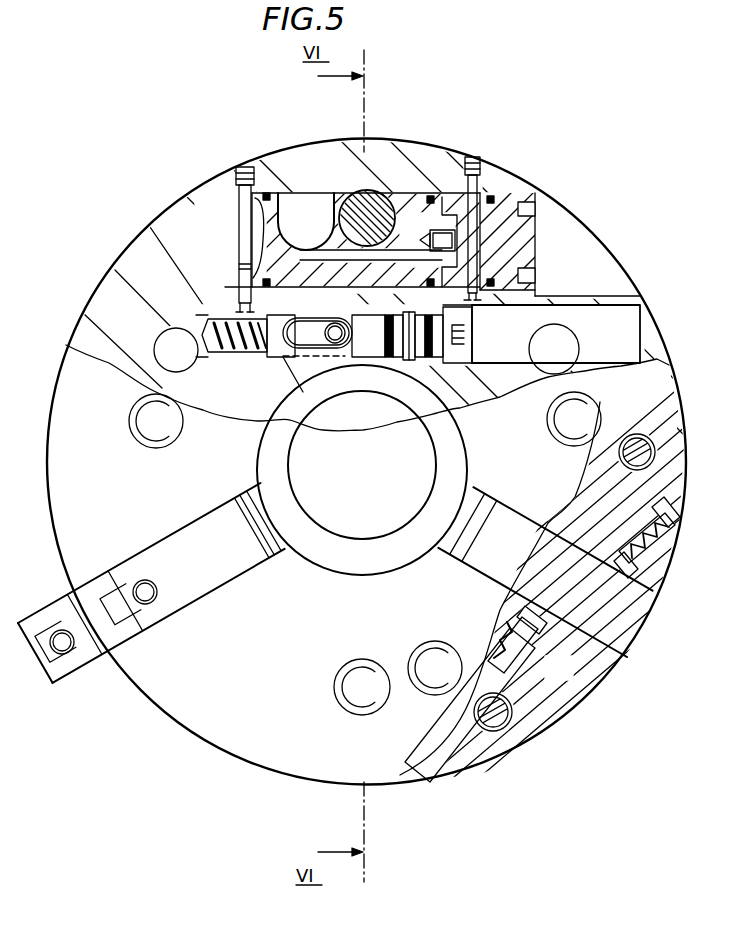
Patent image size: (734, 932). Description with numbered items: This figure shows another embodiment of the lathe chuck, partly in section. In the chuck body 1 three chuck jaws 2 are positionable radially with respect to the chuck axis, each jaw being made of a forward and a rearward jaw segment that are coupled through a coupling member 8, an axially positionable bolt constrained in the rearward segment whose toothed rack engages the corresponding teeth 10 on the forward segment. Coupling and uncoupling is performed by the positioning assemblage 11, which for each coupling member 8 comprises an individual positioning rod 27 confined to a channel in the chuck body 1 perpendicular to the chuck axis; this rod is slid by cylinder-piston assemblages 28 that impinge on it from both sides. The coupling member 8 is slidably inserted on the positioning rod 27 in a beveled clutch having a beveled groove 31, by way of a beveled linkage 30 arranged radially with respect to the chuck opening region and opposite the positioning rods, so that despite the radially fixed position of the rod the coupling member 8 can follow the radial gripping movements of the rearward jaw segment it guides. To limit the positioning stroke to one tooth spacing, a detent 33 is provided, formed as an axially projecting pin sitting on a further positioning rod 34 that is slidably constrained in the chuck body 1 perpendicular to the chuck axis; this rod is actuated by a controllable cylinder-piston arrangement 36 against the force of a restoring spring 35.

The chuck body 1 is at (72, 350).
The chuck jaws 2 is at (70, 684).
The coupling member 8 is at (377, 229).
The teeth 10 is at (540, 616).
The positioning assemblage 11 is at (400, 175).
The positioning rod 27 is at (282, 287).
The cylinder-piston assemblages 28 is at (236, 216).
The beveled linkage 30 is at (406, 224).
The beveled groove 31 is at (355, 252).
The detent 33 is at (347, 296).
The positioning rod 34 is at (373, 328).
The restoring spring 35 is at (248, 353).
The cylinder-piston arrangement 36 is at (403, 363).